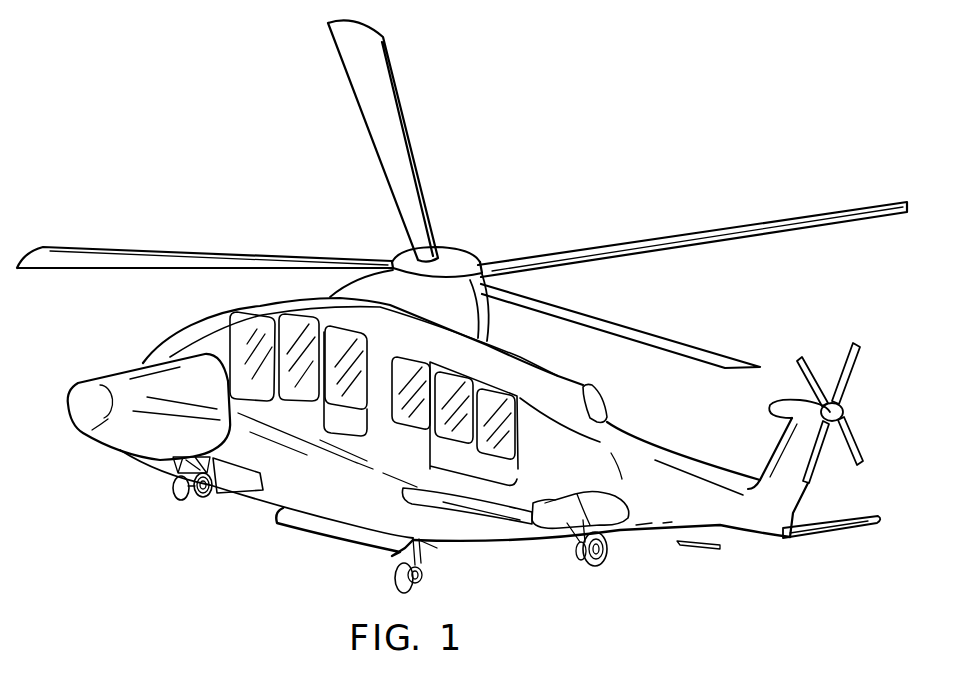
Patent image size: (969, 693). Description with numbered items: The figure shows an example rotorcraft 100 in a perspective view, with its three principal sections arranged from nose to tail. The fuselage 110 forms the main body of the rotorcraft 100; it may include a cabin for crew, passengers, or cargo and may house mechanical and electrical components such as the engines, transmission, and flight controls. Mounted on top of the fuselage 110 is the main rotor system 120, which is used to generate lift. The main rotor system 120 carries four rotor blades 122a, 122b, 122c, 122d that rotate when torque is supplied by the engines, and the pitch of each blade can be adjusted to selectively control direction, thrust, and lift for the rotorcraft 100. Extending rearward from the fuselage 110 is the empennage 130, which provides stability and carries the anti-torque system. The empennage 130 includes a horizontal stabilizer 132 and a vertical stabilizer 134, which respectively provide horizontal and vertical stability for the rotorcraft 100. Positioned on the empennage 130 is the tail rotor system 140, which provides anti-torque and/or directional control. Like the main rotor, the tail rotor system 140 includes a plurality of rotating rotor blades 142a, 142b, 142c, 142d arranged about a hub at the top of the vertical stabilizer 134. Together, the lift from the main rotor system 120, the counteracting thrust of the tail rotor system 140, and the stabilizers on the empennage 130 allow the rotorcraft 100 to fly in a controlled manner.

The rotorcraft 100 is at (194, 60).
The fuselage 110 is at (273, 497).
The main rotor system 120 is at (476, 224).
The rotor blade 122a is at (402, 100).
The rotor blade 122b is at (745, 225).
The rotor blade 122c is at (655, 335).
The rotor blade 122d is at (138, 248).
The empennage 130 is at (653, 525).
The horizontal stabilizer 132 is at (838, 532).
The vertical stabilizer 134 is at (770, 455).
The tail rotor system 140 is at (875, 323).
The rotor blade 142a is at (853, 362).
The rotor blade 142b is at (858, 442).
The rotor blade 142c is at (817, 475).
The rotor blade 142d is at (817, 370).